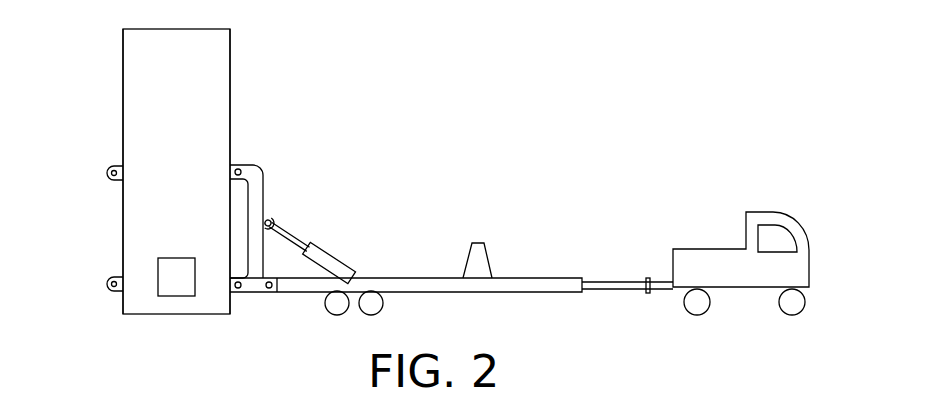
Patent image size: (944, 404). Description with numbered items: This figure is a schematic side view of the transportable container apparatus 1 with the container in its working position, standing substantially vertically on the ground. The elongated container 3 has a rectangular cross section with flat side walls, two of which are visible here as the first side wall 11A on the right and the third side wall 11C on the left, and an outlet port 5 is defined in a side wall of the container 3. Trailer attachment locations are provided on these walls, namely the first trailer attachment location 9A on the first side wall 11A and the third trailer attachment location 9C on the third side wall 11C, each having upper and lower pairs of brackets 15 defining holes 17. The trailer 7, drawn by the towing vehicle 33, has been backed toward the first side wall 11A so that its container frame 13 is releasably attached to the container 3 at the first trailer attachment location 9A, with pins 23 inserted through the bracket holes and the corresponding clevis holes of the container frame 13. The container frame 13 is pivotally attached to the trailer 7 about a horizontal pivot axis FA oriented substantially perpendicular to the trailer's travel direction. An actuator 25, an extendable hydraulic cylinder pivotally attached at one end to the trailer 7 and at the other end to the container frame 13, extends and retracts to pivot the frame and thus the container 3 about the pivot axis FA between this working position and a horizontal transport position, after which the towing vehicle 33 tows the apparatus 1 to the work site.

The transportable container apparatus 1 is at (513, 126).
The elongated container 3 is at (123, 29).
The third side wall 11C is at (123, 87).
The first side wall 11A is at (230, 85).
The brackets 15 is at (108, 170).
The third trailer attachment location 9C is at (108, 281).
The holes 17 is at (112, 292).
The outlet port 5 is at (176, 296).
The container frame 13 is at (264, 205).
The pins 23 is at (241, 167).
The first trailer attachment location 9A is at (238, 294).
The horizontal pivot axis FA is at (272, 294).
The actuator 25 is at (333, 256).
The trailer 7 is at (427, 292).
The towing vehicle 33 is at (782, 212).